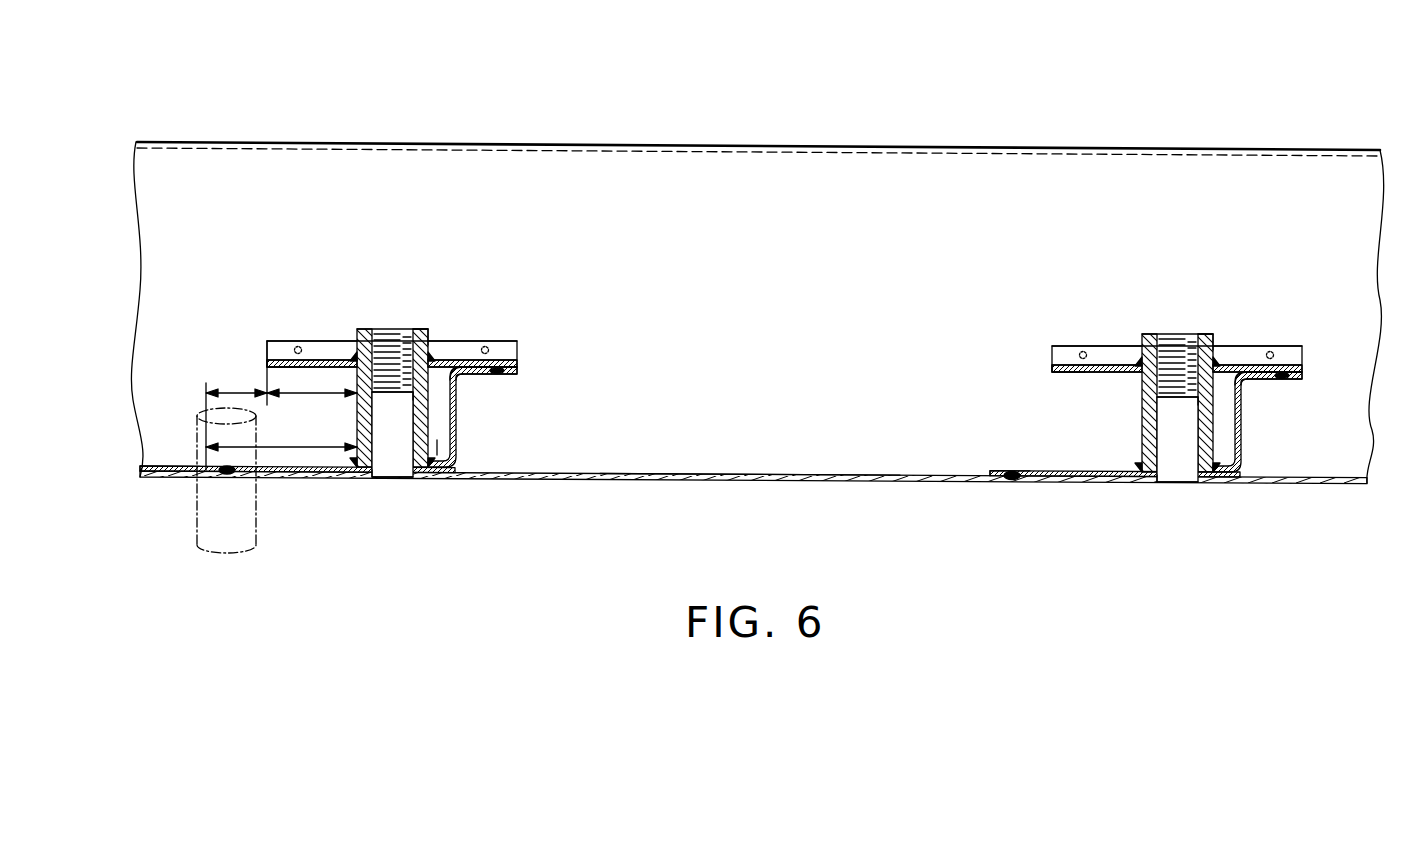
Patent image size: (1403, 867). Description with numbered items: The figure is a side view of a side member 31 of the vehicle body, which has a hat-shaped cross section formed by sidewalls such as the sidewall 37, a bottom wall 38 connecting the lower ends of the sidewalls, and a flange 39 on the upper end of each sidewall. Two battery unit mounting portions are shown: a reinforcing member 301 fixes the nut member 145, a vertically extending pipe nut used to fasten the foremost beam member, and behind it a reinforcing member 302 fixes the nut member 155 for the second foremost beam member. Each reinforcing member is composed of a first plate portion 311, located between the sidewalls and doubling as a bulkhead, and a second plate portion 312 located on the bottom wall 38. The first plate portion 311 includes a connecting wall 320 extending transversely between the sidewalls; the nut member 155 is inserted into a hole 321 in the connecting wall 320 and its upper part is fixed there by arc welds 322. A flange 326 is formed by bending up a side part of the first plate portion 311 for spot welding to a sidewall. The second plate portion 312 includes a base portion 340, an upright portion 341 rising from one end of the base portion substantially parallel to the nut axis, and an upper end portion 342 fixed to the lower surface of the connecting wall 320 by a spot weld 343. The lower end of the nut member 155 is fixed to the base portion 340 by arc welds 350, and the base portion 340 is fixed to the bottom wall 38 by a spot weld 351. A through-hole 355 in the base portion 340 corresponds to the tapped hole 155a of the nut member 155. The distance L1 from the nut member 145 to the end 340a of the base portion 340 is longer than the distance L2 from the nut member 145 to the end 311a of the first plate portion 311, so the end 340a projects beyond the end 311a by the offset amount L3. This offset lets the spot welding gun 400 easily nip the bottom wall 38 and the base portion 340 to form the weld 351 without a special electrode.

The side member 31 is at (803, 146).
The sidewall 37 is at (601, 163).
The bottom wall 38 is at (722, 479).
The flange 39 is at (483, 147).
The reinforcing member 301 is at (500, 336).
The reinforcing member 302 is at (1287, 342).
The first plate portion 311 is at (320, 340).
The end of the first plate portion 311a is at (266, 361).
The second plate portion 312 is at (447, 478).
The connecting wall 320 is at (352, 354).
The hole 321 is at (437, 359).
The welds 322 is at (430, 350).
The flange 326 is at (280, 346).
The base portion 340 is at (287, 472).
The end of the base portion 340a is at (215, 466).
The upright portion 341 is at (458, 437).
The upper end portion 342 is at (503, 371).
The weld 343 is at (489, 376).
The welds 350 is at (351, 465).
The weld 351 is at (224, 473).
The through-hole 355 is at (392, 479).
The nut member 155 is at (1143, 421).
The tapped hole 155a is at (398, 340).
The nut member 145 is at (438, 447).
The spot welding gun 400 is at (197, 420).
The distance L1 is at (287, 446).
The distance L2 is at (312, 393).
The offset amount L3 is at (236, 393).